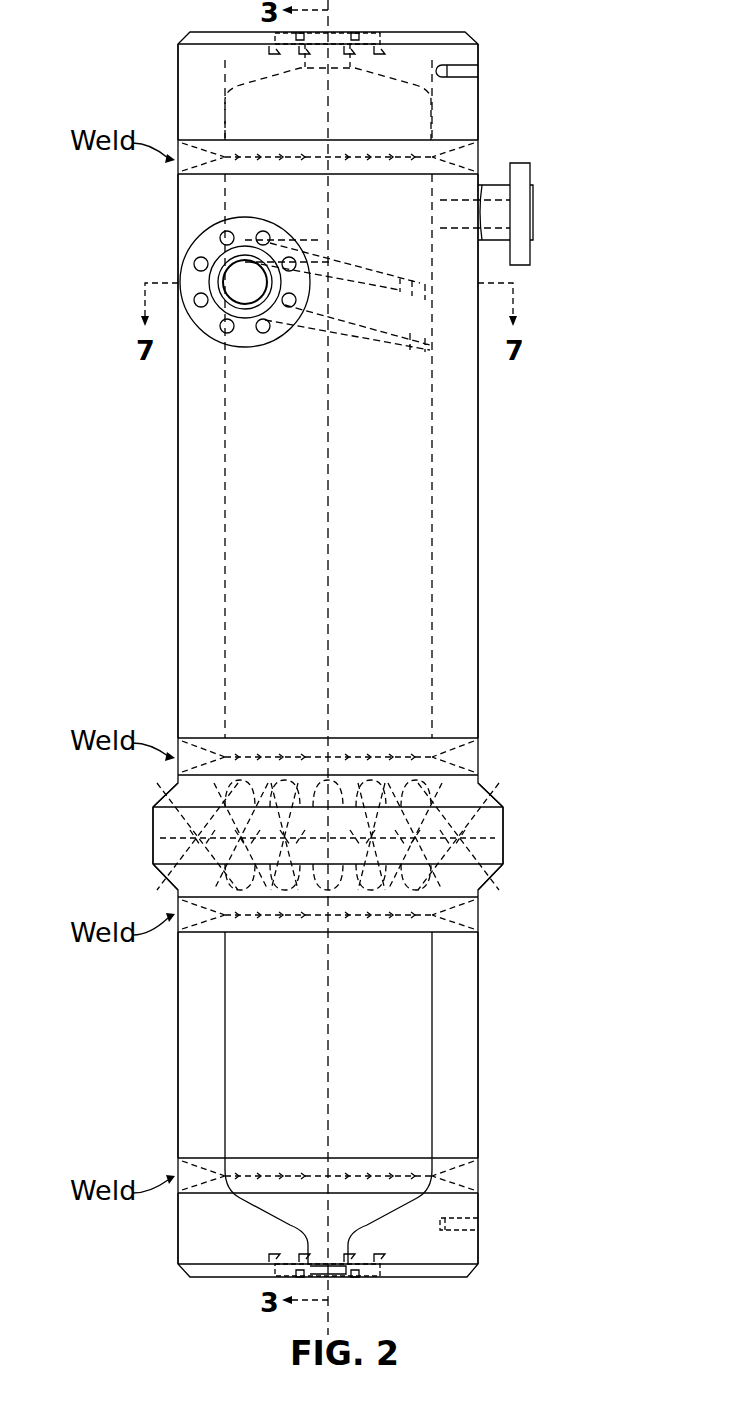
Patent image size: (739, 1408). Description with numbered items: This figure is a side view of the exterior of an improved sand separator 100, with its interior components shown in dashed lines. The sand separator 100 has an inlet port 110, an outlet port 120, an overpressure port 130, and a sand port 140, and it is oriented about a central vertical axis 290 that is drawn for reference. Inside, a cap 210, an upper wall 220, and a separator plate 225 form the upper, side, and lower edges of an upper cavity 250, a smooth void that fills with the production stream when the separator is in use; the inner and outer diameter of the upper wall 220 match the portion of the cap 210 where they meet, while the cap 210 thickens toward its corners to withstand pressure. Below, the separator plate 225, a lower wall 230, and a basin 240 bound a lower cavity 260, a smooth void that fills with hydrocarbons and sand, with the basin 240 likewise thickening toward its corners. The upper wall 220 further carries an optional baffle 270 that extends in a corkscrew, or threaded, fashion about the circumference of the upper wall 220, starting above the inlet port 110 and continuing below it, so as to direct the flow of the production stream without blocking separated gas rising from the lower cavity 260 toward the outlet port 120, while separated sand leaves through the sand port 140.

The sand separator 100 is at (162, 27).
The inlet port 110 is at (197, 278).
The outlet port 120 is at (340, 32).
The overpressure port 130 is at (520, 180).
The sand port 140 is at (337, 1280).
The cap 210 is at (468, 100).
The upper wall 220 is at (192, 448).
The separator plate 225 is at (158, 838).
The lower wall 230 is at (185, 1078).
The basin 240 is at (468, 1248).
The upper cavity 250 is at (388, 560).
The lower cavity 260 is at (393, 1055).
The baffle 270 is at (400, 277).
The central vertical axis 290 is at (325, 610).